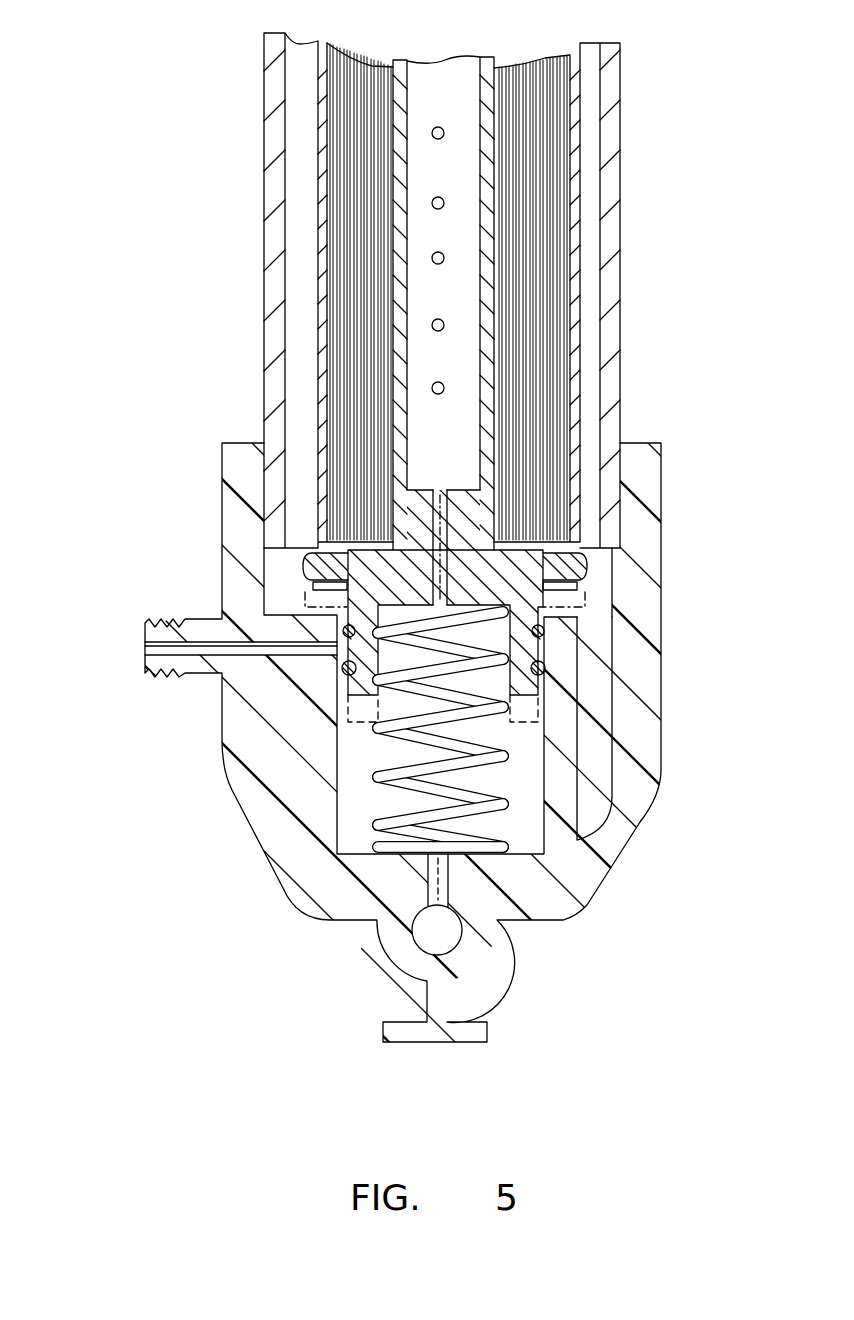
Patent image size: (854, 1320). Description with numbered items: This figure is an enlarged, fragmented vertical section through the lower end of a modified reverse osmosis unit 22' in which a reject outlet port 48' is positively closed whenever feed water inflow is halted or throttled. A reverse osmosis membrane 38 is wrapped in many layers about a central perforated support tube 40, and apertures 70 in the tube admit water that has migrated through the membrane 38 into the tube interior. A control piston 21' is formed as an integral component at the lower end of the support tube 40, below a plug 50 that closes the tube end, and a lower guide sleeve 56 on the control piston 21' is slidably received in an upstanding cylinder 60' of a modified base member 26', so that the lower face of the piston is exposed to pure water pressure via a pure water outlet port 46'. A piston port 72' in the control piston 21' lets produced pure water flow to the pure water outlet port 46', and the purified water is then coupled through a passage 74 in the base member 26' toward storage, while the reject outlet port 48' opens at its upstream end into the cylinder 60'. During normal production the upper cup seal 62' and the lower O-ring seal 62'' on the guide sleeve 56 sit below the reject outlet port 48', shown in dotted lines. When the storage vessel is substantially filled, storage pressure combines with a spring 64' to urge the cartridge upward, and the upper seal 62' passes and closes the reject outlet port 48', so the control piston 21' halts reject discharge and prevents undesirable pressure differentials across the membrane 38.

The control piston 21' is at (653, 300).
The reverse osmosis unit 22' is at (478, 290).
The base member 26' is at (427, 744).
The reverse osmosis membrane 38 is at (537, 105).
The perforated support tube 40 is at (410, 62).
The pure water outlet port 46' is at (368, 923).
The reject outlet port 48' is at (191, 657).
The plug 50 is at (462, 502).
The retainer 56 is at (535, 697).
The cylinder 60' is at (651, 728).
The upper cup seal 62' is at (629, 650).
The lower O-ring seal 62'' is at (235, 688).
The spring 64' is at (425, 729).
The apertures 70 is at (410, 130).
The piston port 72' is at (435, 525).
The passage 74 is at (440, 953).